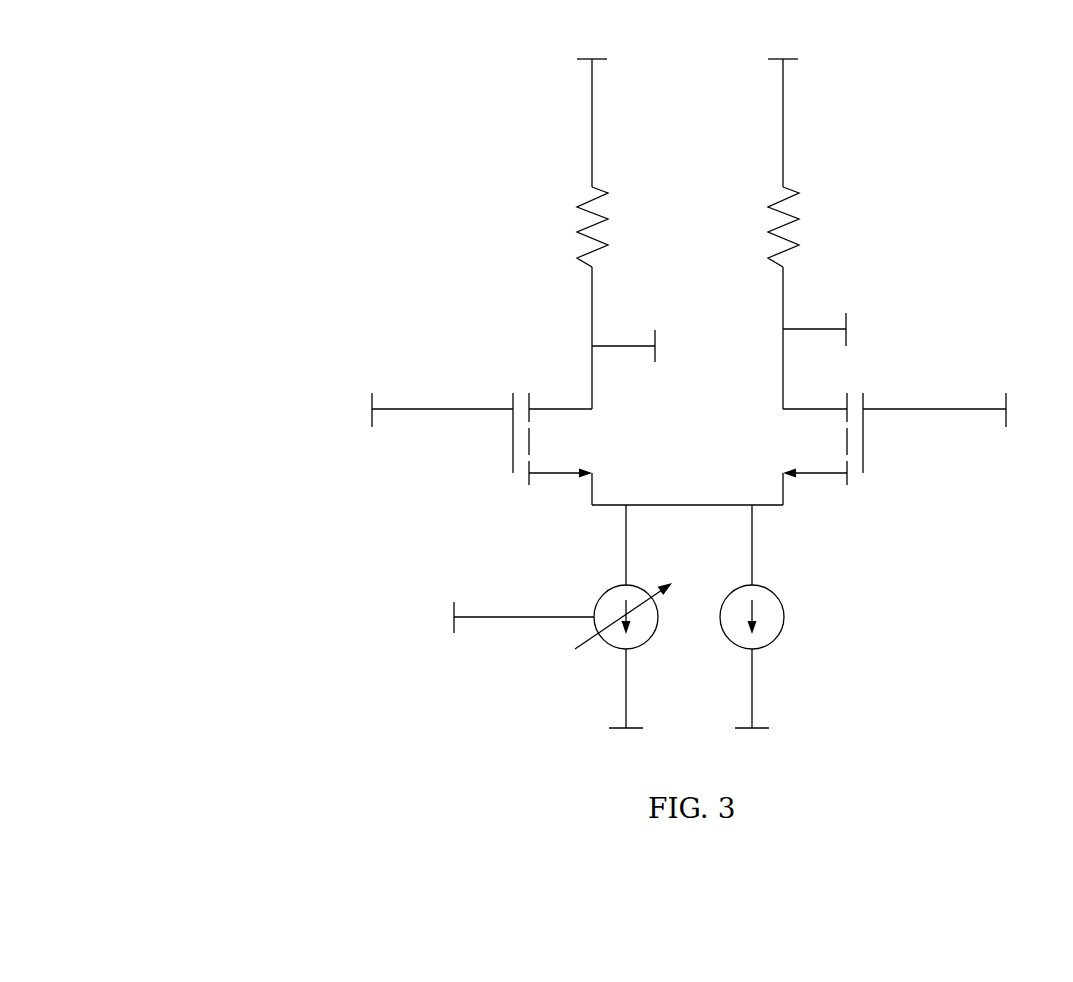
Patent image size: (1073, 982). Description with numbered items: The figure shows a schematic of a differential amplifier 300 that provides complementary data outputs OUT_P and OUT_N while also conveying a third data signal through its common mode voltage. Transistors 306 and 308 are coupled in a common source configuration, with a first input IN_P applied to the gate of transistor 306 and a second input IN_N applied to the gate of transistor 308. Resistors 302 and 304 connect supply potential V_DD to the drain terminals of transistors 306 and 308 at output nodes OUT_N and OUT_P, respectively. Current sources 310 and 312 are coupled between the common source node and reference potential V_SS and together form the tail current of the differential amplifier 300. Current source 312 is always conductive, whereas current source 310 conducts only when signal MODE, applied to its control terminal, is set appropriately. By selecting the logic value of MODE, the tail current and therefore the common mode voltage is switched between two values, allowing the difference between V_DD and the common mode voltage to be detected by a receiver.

The differential amplifier 300 is at (190, 672).
The resistor 302 is at (588, 230).
The resistor 304 is at (793, 217).
The transistor 306 is at (560, 474).
The transistor 308 is at (813, 474).
The current source 310 is at (609, 585).
The current source 312 is at (775, 590).